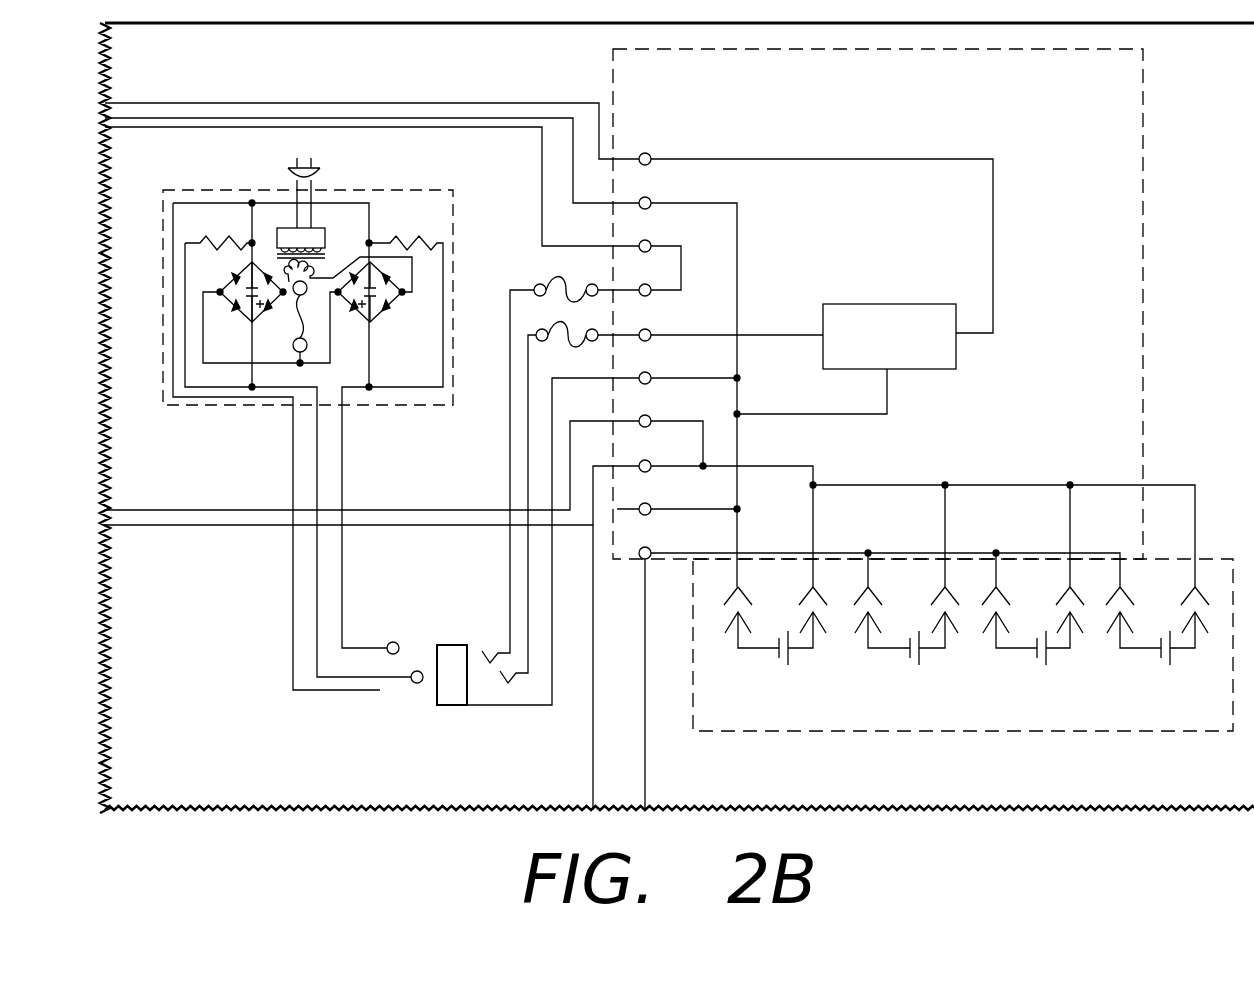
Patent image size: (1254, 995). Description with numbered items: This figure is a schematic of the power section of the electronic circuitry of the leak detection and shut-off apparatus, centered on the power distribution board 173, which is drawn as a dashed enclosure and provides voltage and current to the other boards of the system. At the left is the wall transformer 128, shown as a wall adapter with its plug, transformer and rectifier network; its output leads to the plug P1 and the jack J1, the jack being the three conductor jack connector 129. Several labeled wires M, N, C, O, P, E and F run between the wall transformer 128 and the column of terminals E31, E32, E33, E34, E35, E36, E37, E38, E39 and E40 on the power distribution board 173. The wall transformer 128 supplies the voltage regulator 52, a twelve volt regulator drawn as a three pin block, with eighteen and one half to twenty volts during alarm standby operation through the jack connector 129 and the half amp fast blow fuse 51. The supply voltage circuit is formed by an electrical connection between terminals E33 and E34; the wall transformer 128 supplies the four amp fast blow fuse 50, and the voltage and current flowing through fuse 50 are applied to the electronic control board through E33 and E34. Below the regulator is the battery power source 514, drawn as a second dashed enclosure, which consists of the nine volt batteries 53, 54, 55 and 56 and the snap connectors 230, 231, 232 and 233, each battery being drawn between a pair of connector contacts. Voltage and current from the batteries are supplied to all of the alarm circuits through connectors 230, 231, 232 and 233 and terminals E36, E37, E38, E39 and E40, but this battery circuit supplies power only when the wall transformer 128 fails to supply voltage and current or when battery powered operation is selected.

The wall transformer 128 is at (212, 191).
The jack connector 129 is at (450, 705).
The fuse 50 is at (540, 283).
The fuse 51 is at (587, 330).
The voltage regulator 52 is at (876, 308).
The power distribution board 173 is at (1136, 228).
The battery power source 514 is at (990, 732).
The snap connector 230 is at (755, 622).
The snap connector 231 is at (885, 622).
The snap connector 232 is at (1013, 622).
The snap connector 233 is at (1180, 620).
The battery 53 is at (775, 656).
The battery 54 is at (905, 664).
The battery 55 is at (1032, 662).
The battery 56 is at (1148, 662).
The line M is at (155, 103).
The line N is at (215, 118).
The line C is at (152, 128).
The line O is at (224, 510).
The line P is at (195, 527).
The line E is at (592, 745).
The line F is at (641, 748).
The plug P1 is at (392, 628).
The jack J1 is at (452, 660).
The terminal E31 is at (807, 229).
The terminal E32 is at (679, 378).
The terminal E33 is at (651, 251).
The terminal E34 is at (632, 276).
The terminal E35 is at (710, 321).
The terminal E36 is at (603, 524).
The terminal E37 is at (664, 428).
The terminal E38 is at (908, 509).
The terminal E39 is at (678, 495).
The terminal E40 is at (871, 553).